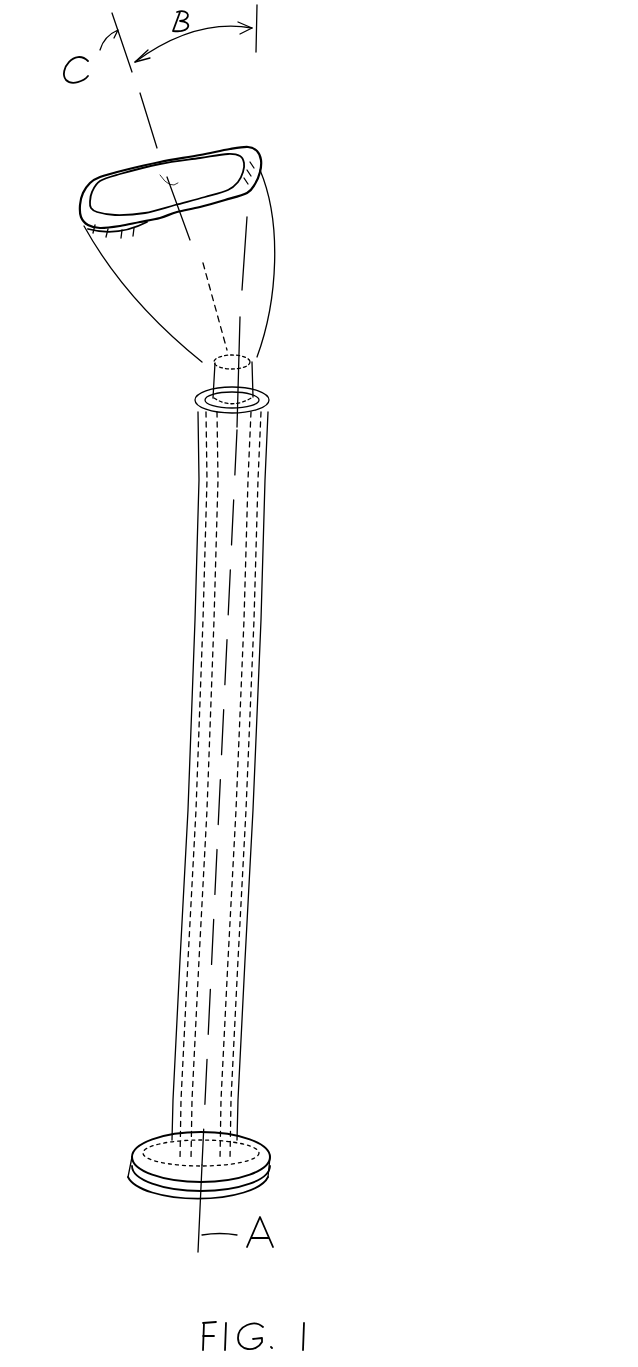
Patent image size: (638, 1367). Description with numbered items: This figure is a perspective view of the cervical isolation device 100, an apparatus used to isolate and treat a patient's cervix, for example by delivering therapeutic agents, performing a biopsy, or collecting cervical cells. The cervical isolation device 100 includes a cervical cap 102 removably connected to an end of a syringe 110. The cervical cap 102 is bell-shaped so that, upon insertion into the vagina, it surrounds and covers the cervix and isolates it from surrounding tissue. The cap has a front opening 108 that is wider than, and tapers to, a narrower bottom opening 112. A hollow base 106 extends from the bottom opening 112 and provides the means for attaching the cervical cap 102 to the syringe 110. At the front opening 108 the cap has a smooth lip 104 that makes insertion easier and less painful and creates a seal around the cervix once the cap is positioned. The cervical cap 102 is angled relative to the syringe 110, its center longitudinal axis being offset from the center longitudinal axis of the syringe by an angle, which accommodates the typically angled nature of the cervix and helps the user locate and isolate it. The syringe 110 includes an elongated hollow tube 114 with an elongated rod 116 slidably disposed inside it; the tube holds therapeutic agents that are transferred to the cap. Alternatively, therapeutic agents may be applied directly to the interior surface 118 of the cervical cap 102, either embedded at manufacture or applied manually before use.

The cervical isolation device 100 is at (472, 289).
The cervical cap 102 is at (257, 253).
The lip 104 is at (250, 153).
The hollow base 106 is at (255, 372).
The front opening 108 is at (277, 63).
The syringe 110 is at (342, 691).
The bottom opening 112 is at (250, 350).
The elongated hollow tube 114 is at (245, 888).
The elongated rod 116 is at (227, 773).
The interior surface 118 is at (100, 210).